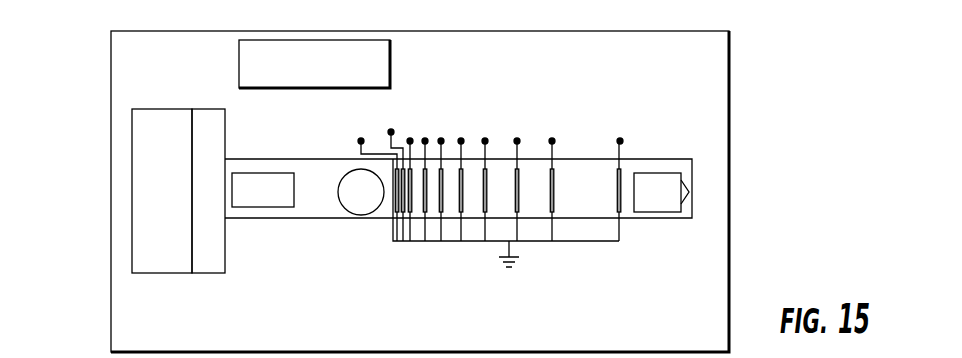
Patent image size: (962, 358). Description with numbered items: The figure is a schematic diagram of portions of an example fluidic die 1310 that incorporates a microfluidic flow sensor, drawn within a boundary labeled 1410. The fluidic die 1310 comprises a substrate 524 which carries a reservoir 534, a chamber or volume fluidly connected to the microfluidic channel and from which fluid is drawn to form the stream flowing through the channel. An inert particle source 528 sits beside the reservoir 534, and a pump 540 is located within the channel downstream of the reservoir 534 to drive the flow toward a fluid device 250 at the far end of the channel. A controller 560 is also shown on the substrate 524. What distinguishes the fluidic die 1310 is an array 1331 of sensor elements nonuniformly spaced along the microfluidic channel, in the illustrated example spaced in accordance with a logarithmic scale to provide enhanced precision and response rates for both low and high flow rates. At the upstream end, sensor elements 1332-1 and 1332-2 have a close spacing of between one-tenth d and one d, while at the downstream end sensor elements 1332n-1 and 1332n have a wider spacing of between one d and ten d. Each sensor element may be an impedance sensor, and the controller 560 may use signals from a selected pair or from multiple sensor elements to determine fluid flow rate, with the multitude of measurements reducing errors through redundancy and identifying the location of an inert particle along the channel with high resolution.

The fluidic die 1310 is at (415, 177).
The sheet/system designation 1410 is at (26, 344).
The substrate 524 is at (731, 103).
The inert particle source 528 is at (132, 207).
The reservoir 534 is at (210, 274).
The pump 540 is at (247, 197).
The controller 560 is at (239, 75).
The array of sensor elements 1331 is at (536, 147).
The sensor element 1332-1 is at (361, 141).
The sensor element 1332-2 is at (393, 131).
The sensor element 1332n-1 is at (552, 141).
The sensor element 1332n is at (620, 141).
The fluid device 250 is at (647, 213).